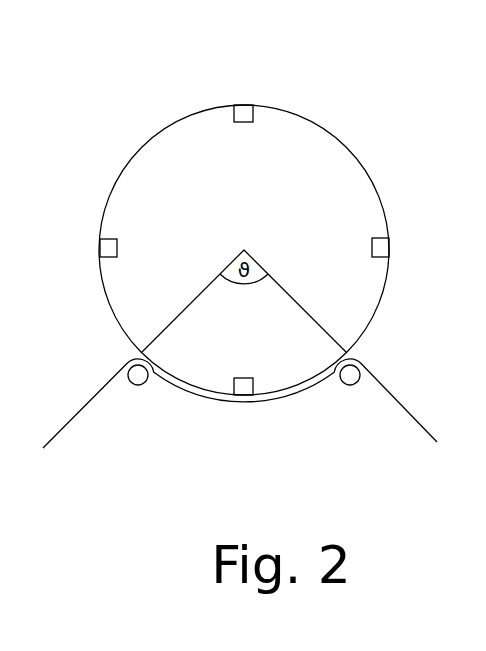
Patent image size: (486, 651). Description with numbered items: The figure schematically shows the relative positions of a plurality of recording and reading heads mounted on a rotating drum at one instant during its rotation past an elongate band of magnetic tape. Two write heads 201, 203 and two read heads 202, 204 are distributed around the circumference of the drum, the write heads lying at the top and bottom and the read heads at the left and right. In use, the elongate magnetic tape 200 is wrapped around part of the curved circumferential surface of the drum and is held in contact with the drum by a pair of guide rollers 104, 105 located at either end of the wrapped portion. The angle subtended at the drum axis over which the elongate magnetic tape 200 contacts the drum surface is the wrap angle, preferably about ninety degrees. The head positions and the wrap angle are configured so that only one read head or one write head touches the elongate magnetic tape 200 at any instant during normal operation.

The elongate magnetic tape 200 is at (393, 402).
The write head 201 is at (247, 386).
The read head 202 is at (108, 250).
The write head 203 is at (242, 110).
The read head 204 is at (385, 250).
The guide roller 104 is at (138, 385).
The guide roller 105 is at (350, 385).